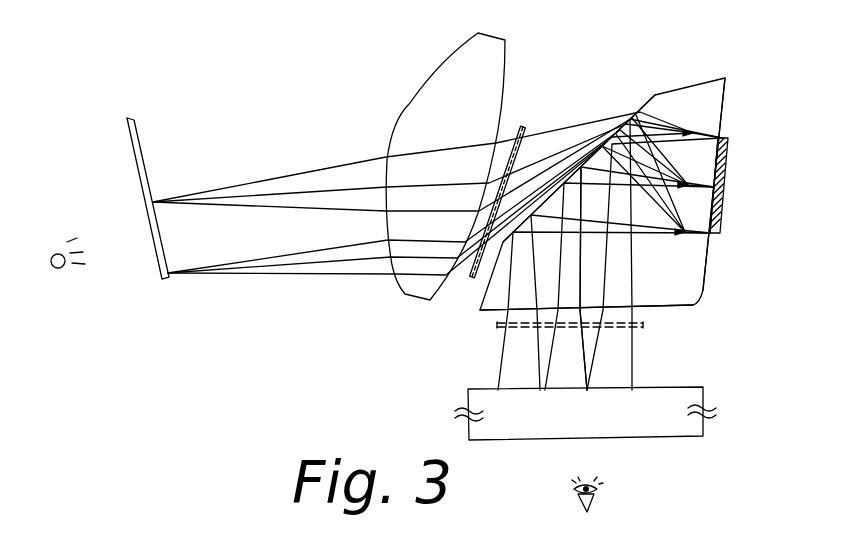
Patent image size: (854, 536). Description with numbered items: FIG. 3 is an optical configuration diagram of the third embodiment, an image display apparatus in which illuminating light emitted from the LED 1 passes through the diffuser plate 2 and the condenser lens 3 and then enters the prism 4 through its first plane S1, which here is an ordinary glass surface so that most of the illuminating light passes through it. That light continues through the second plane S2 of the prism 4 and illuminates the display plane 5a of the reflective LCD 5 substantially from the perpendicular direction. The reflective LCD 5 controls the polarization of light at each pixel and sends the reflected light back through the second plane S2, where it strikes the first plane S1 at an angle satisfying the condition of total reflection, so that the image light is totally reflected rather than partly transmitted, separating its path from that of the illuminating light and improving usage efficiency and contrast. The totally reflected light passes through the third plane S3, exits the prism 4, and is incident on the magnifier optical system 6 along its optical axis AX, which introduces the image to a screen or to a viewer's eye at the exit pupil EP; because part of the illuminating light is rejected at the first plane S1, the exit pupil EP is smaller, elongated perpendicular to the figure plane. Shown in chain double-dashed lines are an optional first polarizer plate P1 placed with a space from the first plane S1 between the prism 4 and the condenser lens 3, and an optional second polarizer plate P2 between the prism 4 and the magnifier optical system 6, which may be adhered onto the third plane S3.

The LED 1 is at (58, 268).
The diffuser plate 2 is at (156, 247).
The condenser lens 3 is at (438, 62).
The prism 4 is at (690, 87).
The reflective LCD 5 is at (716, 236).
The display plane 5a is at (715, 160).
The magnifier optical system 6 is at (683, 388).
The first polarizer plate P1 is at (517, 123).
The second polarizer plate P2 is at (640, 326).
The first plane S1 is at (643, 107).
The second plane S2 is at (722, 103).
The third plane S3 is at (493, 312).
The optical axis AX is at (583, 350).
The exit pupil EP is at (612, 484).